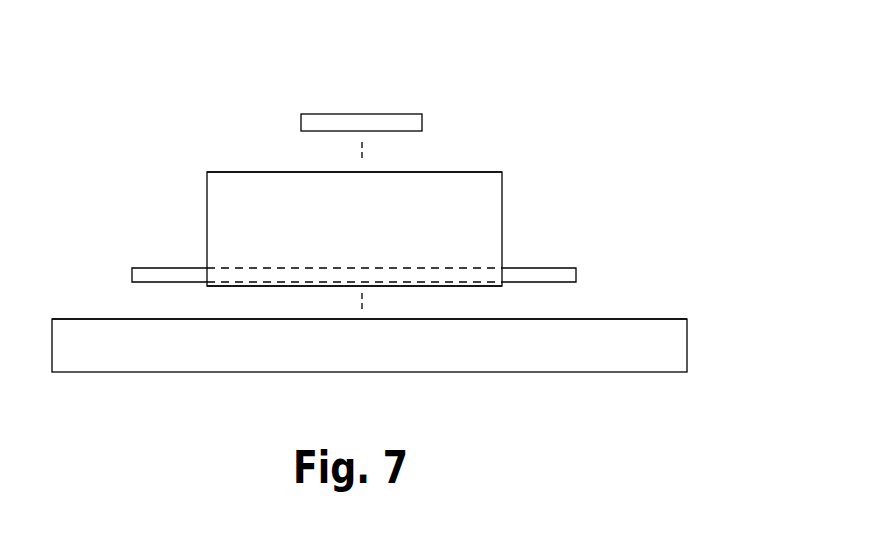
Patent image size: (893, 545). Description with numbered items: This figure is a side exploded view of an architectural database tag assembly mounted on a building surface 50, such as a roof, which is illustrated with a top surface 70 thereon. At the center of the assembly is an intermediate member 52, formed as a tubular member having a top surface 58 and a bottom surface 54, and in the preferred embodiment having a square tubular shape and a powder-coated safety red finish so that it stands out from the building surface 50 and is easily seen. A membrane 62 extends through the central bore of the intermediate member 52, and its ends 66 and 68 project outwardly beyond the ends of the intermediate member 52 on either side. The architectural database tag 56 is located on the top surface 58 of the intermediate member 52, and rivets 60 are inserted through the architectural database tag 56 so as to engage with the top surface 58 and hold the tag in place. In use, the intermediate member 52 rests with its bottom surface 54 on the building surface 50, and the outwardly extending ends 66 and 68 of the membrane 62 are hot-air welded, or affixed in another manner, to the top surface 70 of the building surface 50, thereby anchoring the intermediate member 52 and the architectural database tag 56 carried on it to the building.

The building surface 50 is at (677, 353).
The intermediate member 52 is at (481, 197).
The bottom surface 54 is at (452, 287).
The architectural database tag 56 is at (305, 125).
The top surface 58 is at (455, 172).
The rivets 60 is at (313, 96).
The membrane 62 is at (163, 266).
The end of membrane 66 is at (135, 274).
The end of membrane 68 is at (543, 268).
The top surface 70 is at (657, 319).